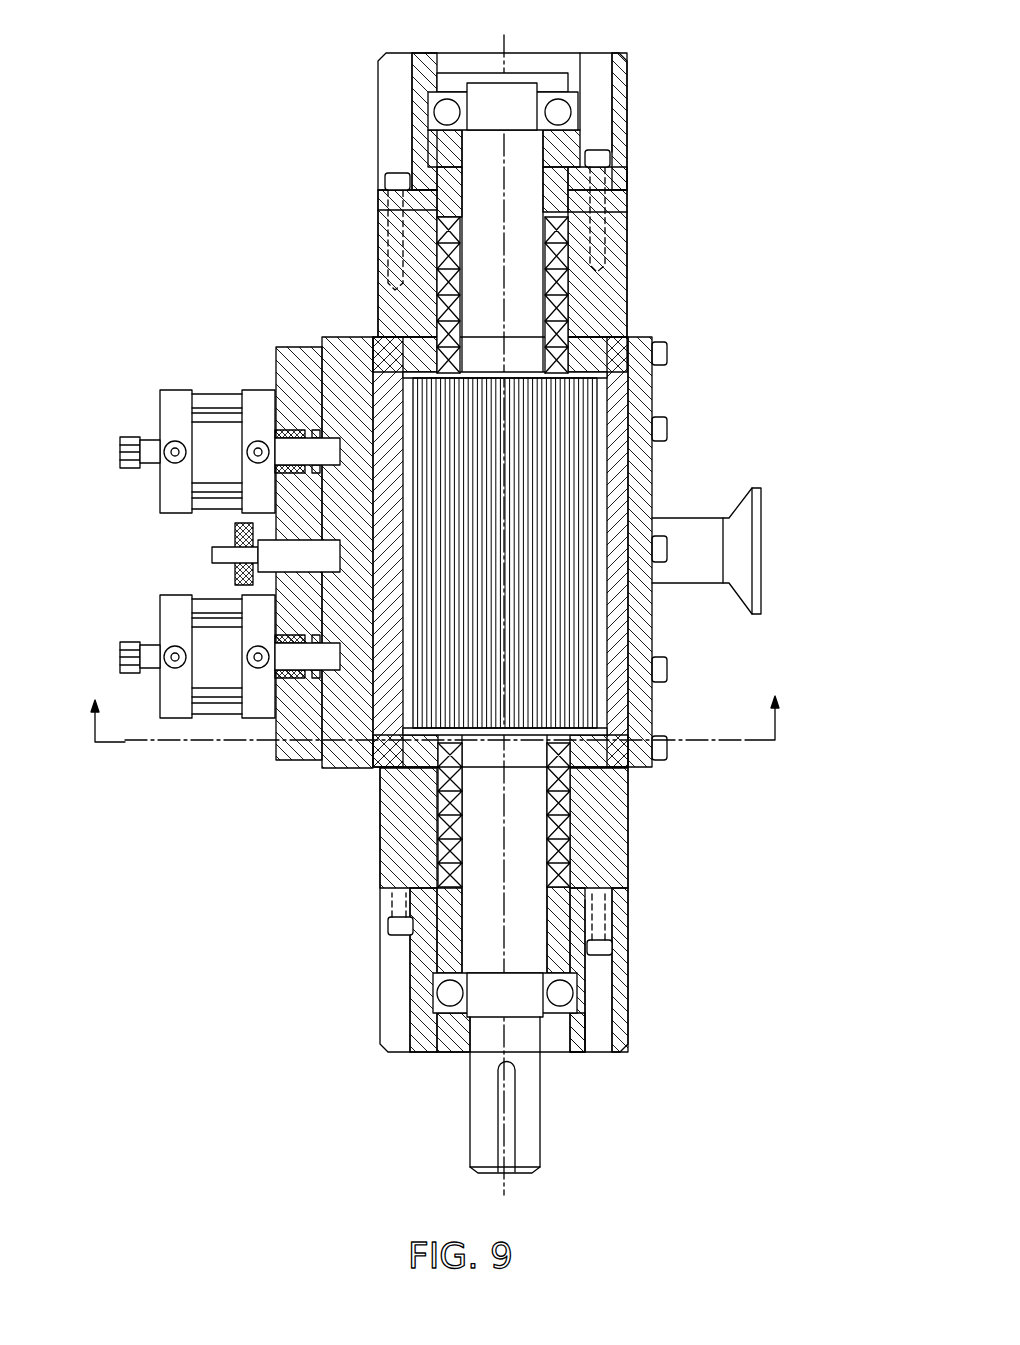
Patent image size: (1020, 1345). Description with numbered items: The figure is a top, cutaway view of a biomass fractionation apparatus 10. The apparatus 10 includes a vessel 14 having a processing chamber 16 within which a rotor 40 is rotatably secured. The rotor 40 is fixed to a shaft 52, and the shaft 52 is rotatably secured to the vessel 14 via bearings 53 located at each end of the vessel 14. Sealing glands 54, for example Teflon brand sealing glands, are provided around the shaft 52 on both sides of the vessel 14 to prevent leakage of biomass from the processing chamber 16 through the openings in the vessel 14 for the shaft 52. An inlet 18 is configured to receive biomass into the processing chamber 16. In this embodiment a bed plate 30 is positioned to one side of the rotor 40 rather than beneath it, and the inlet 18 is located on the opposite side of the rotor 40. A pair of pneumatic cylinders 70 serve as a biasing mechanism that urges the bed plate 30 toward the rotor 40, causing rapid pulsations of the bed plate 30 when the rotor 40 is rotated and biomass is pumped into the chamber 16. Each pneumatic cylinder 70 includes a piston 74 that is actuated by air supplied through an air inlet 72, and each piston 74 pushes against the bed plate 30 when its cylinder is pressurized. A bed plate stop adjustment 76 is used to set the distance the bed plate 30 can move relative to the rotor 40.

The biomass fractionation apparatus 10 is at (718, 88).
The vessel 14 is at (645, 478).
The processing chamber 16 is at (603, 652).
The inlet 18 is at (757, 552).
The bed plate 30 is at (388, 387).
The rotor 40 is at (565, 405).
The shaft 52 is at (530, 1105).
The bearings 53 is at (430, 102).
The sealing glands 54 is at (440, 298).
The pneumatic cylinders 70 is at (213, 384).
The air inlet 72 is at (126, 436).
The piston 74 is at (305, 425).
The bed plate stop adjustment 76 is at (232, 580).